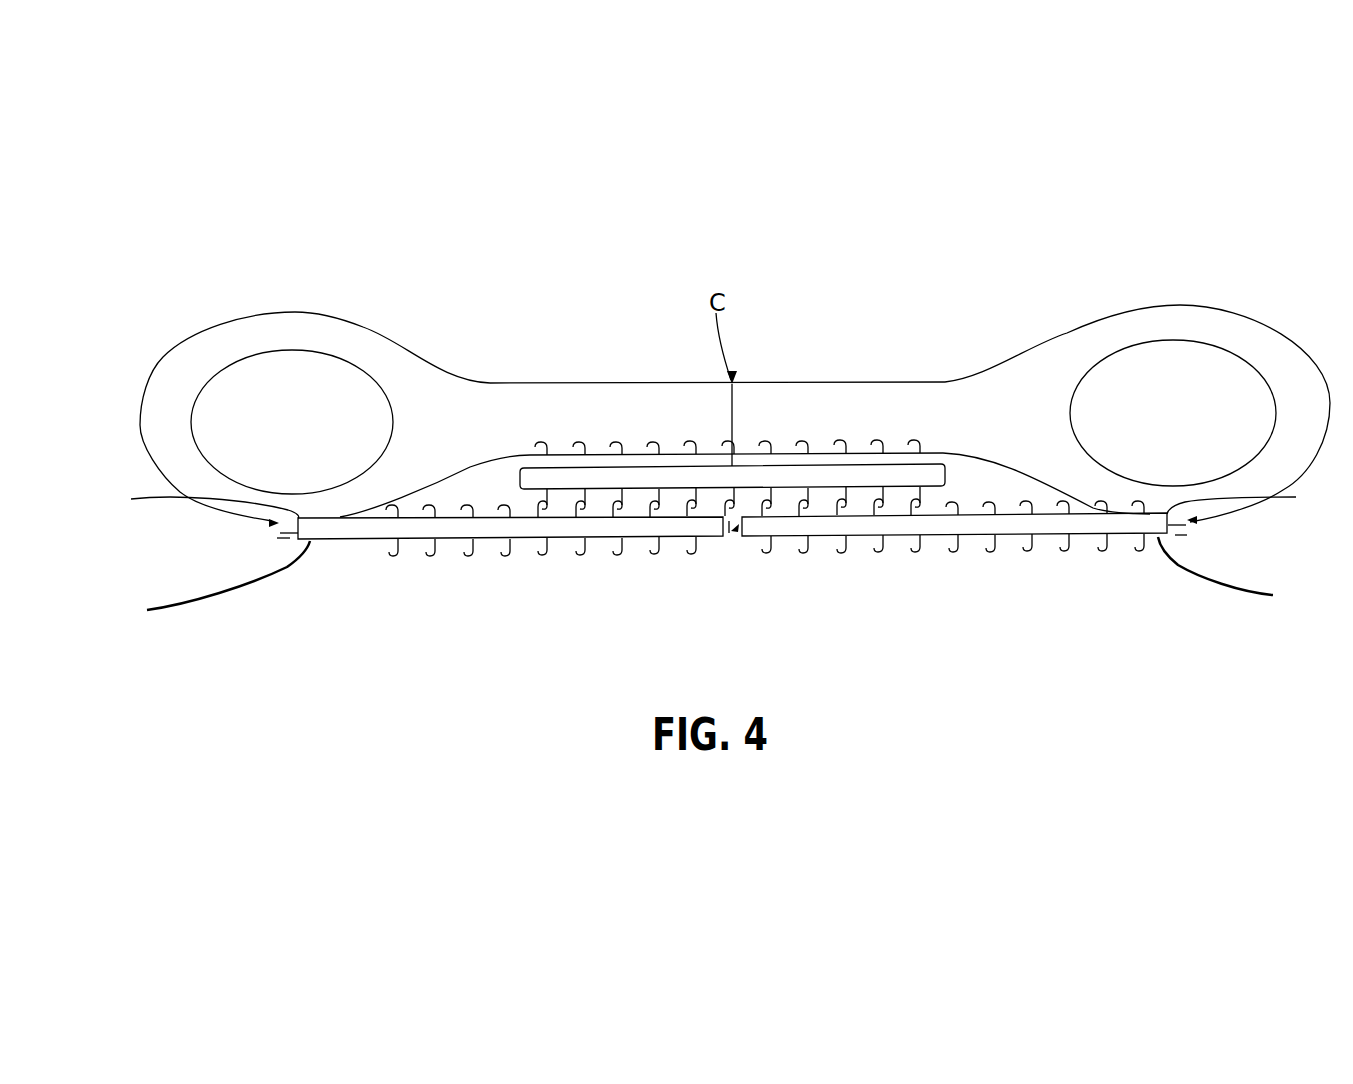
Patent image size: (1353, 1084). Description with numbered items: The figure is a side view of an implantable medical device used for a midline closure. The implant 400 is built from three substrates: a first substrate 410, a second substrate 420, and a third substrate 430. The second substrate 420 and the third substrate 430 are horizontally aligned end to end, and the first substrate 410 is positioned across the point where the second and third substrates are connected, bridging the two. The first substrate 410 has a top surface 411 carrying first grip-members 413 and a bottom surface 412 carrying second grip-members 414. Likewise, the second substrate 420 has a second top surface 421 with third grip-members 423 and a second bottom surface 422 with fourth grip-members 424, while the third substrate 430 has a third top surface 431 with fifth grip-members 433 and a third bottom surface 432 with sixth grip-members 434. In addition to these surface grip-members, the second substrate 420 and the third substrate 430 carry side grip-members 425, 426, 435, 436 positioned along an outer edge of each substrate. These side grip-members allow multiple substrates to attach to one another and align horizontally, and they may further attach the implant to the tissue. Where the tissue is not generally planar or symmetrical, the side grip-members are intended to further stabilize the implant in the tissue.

The implant 400 is at (598, 620).
The first substrate 410 is at (937, 473).
The top surface 411 is at (530, 462).
The bottom surface 412 is at (532, 491).
The first grip-members 413 is at (838, 443).
The second grip-members 414 is at (611, 506).
The second substrate 420 is at (384, 541).
The second top surface 421 is at (196, 503).
The second bottom surface 422 is at (203, 582).
The third grip-members 423 is at (277, 538).
The fourth grip-members 424 is at (470, 560).
The side grip-member 425 is at (270, 524).
The side grip-member 426 is at (730, 533).
The third substrate 430 is at (1130, 534).
The third top surface 431 is at (1250, 500).
The third bottom surface 432 is at (1245, 574).
The fifth grip-members 433 is at (1197, 521).
The sixth grip-members 434 is at (1063, 552).
The side grip-member 435 is at (737, 530).
The side grip-member 436 is at (1187, 535).